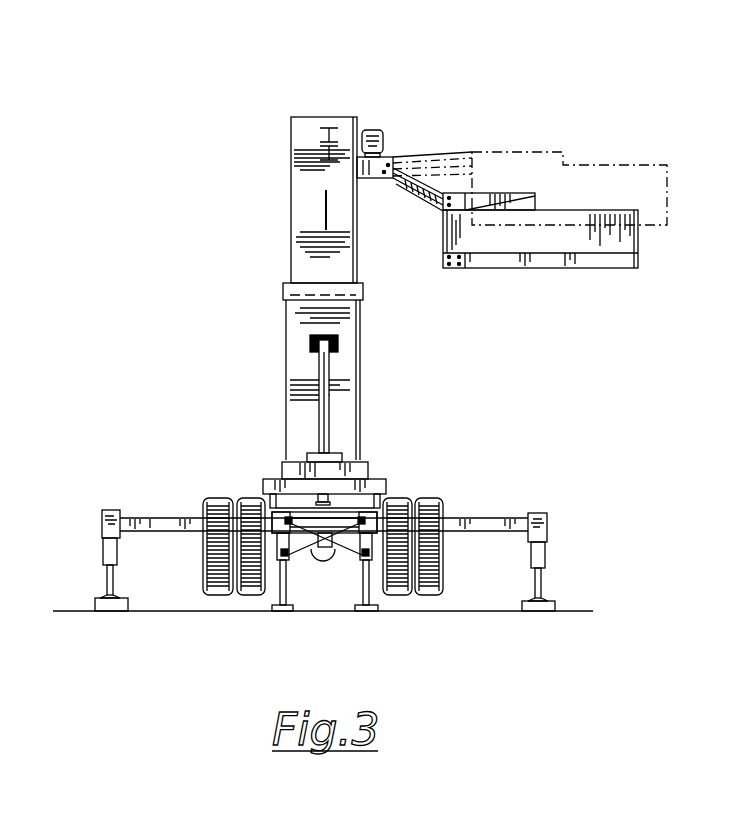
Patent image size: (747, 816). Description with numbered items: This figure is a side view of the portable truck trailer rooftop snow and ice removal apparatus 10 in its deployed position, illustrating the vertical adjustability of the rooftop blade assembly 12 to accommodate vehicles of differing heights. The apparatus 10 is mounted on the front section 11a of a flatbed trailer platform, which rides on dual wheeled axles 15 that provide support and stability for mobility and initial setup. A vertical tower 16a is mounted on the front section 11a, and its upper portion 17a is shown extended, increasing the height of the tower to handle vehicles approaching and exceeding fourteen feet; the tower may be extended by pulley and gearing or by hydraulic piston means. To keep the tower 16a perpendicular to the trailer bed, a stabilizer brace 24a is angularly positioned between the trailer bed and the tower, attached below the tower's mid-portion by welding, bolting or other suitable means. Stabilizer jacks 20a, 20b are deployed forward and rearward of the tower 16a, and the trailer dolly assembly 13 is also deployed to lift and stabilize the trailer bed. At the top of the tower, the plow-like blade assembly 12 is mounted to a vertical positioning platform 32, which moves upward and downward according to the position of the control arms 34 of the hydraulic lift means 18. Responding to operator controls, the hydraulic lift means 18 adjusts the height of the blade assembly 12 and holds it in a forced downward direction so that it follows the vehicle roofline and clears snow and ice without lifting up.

The portable truck trailer rooftop snow and ice removal apparatus 10 is at (208, 72).
The front section of the trailer platform 11a is at (370, 487).
The blade assembly 12 is at (625, 248).
The trailer dolly assembly 13 is at (287, 580).
The dual wheeled axles 15 is at (245, 593).
The tower 16a is at (298, 342).
The upper portion of the tower 17a is at (300, 190).
The hydraulic lift means 18 is at (398, 142).
The stabilizer jack 20a is at (103, 530).
The stabilizer jack 20b is at (547, 527).
The stabilizer brace 24a is at (327, 405).
The vertical positioning platform 32 is at (485, 200).
The control arms 34 is at (432, 200).